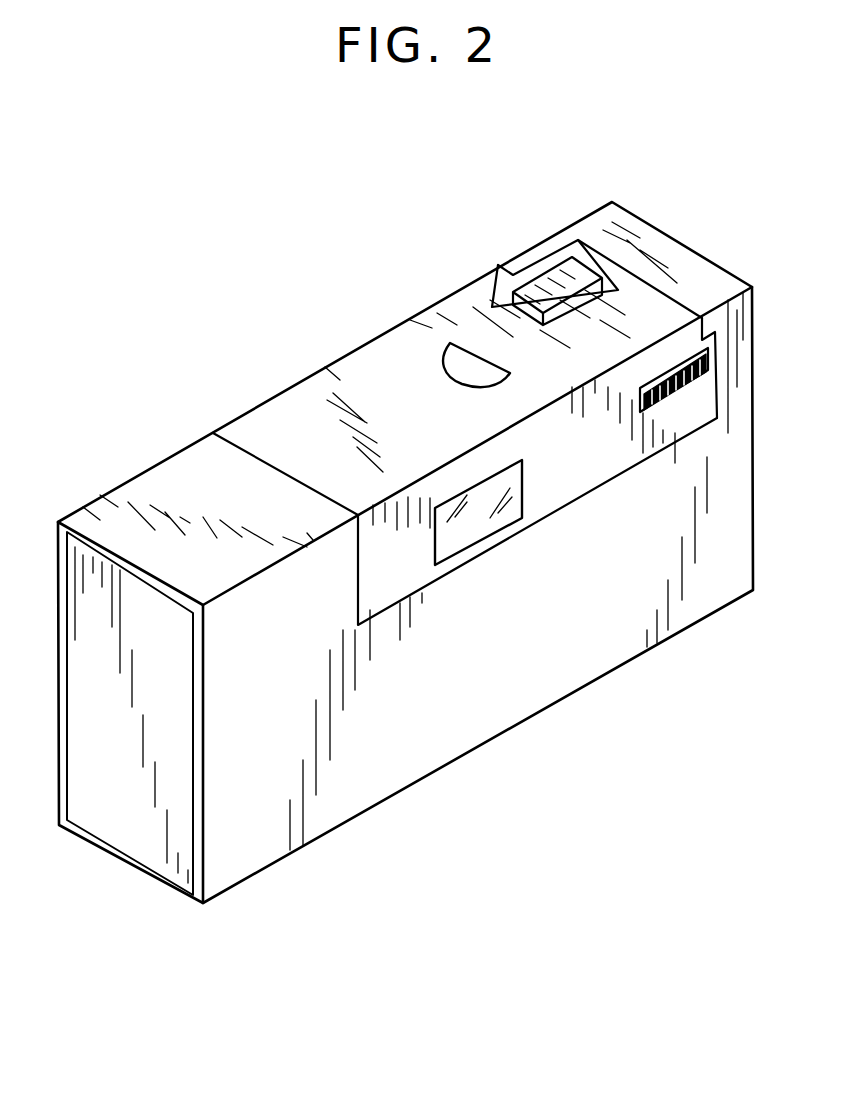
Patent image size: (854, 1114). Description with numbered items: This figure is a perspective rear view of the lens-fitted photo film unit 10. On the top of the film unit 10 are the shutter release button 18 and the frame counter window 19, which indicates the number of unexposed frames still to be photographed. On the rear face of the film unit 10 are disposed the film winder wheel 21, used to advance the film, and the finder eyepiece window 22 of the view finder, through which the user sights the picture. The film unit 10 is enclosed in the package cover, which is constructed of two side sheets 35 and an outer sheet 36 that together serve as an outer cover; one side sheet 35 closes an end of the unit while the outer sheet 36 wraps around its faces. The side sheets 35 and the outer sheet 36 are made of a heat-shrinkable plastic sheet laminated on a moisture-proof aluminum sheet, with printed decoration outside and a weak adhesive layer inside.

The lens-fitted photo film unit 10 is at (365, 343).
The shutter release button 18 is at (552, 297).
The frame counter window 19 is at (462, 363).
The film winder wheel 21 is at (712, 360).
The finder eyepiece window 22 is at (523, 477).
The side sheet 35 is at (122, 828).
The outer sheet 36 is at (117, 522).